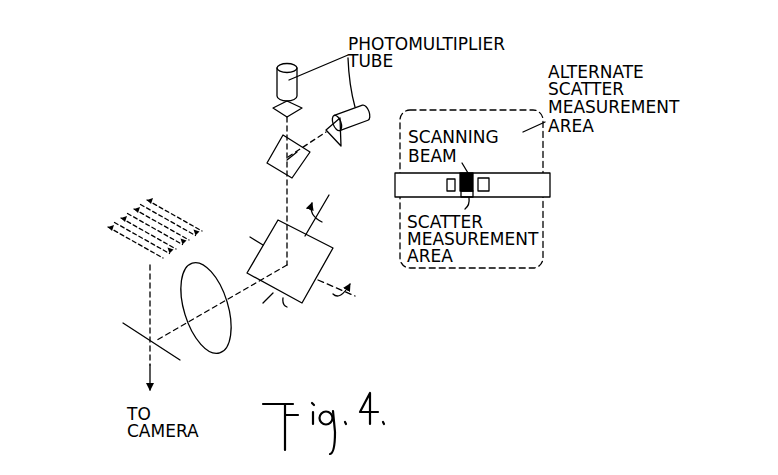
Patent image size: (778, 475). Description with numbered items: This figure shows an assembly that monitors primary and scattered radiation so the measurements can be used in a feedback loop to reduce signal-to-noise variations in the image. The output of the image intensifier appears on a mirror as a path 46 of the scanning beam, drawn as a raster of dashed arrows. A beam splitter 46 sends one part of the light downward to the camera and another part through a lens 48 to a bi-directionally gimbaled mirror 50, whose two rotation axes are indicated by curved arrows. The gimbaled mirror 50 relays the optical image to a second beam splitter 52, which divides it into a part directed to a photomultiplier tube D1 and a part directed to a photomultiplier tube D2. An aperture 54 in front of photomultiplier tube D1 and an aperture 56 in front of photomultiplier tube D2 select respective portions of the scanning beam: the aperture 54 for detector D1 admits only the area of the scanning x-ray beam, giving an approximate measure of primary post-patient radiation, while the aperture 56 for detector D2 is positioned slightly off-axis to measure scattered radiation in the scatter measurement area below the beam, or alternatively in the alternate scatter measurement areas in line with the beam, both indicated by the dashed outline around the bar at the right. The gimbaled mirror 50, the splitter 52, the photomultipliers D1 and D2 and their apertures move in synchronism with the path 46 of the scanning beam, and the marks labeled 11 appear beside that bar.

The photomultiplier tube D1 is at (277, 84).
The photomultiplier tube D2 is at (357, 125).
The aperture 54 is at (284, 114).
The second beam splitter 52 is at (296, 173).
The aperture 56 is at (339, 146).
The bi-directionally gimbaled mirror 50 is at (332, 282).
The lens 48 is at (214, 338).
The beam splitter 46 is at (127, 206).
The sample bar with scatter measurement area 11 is at (552, 148).